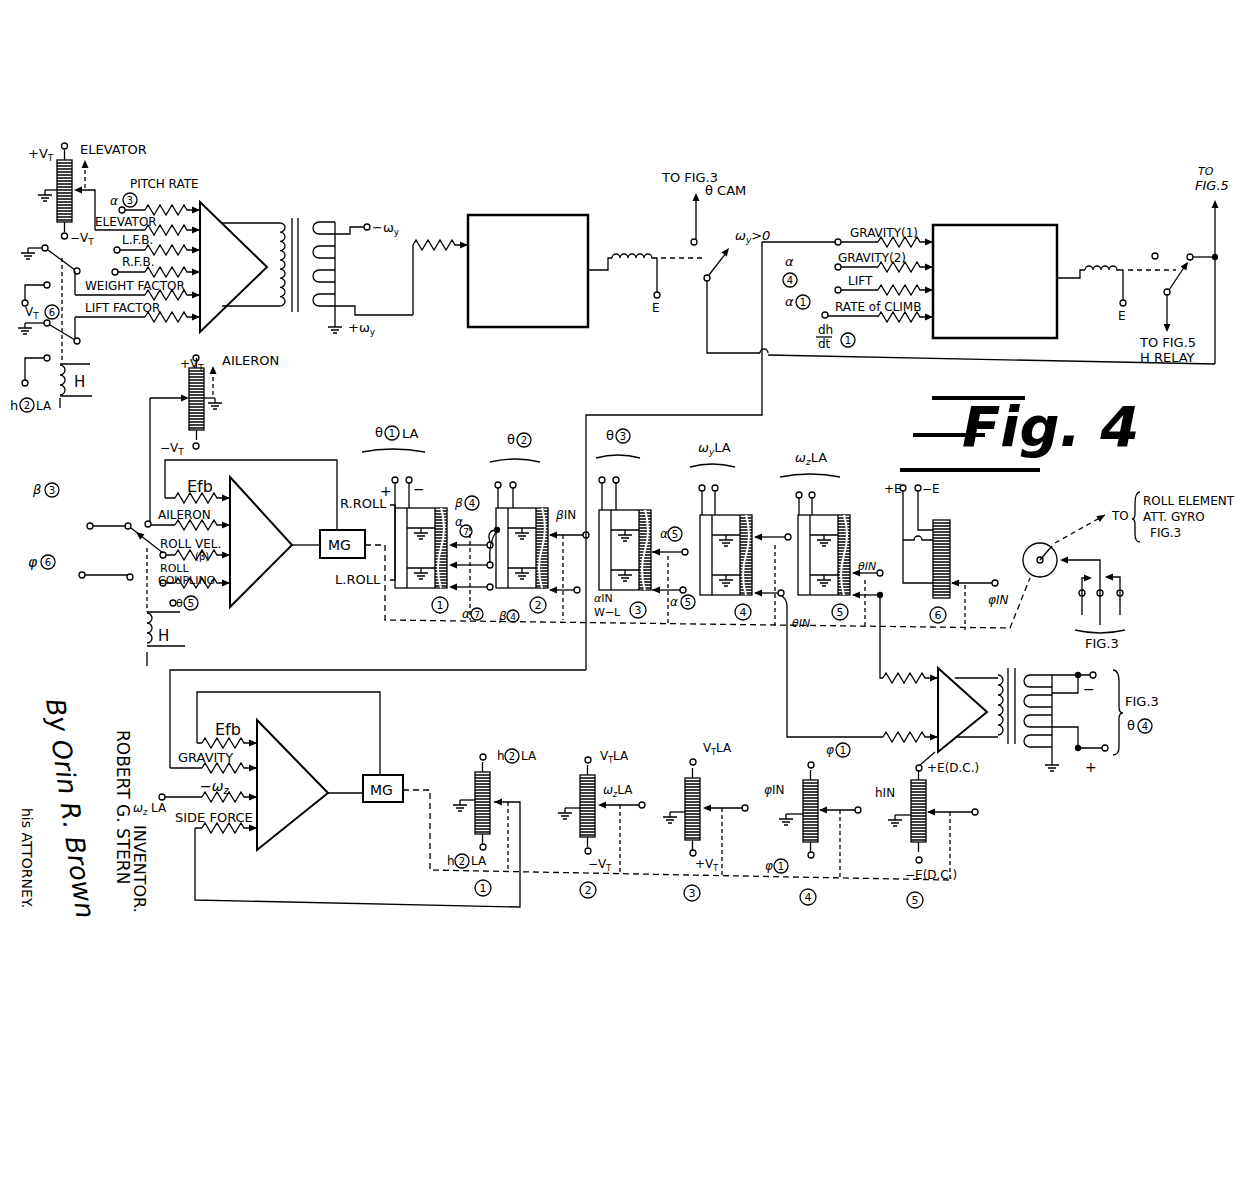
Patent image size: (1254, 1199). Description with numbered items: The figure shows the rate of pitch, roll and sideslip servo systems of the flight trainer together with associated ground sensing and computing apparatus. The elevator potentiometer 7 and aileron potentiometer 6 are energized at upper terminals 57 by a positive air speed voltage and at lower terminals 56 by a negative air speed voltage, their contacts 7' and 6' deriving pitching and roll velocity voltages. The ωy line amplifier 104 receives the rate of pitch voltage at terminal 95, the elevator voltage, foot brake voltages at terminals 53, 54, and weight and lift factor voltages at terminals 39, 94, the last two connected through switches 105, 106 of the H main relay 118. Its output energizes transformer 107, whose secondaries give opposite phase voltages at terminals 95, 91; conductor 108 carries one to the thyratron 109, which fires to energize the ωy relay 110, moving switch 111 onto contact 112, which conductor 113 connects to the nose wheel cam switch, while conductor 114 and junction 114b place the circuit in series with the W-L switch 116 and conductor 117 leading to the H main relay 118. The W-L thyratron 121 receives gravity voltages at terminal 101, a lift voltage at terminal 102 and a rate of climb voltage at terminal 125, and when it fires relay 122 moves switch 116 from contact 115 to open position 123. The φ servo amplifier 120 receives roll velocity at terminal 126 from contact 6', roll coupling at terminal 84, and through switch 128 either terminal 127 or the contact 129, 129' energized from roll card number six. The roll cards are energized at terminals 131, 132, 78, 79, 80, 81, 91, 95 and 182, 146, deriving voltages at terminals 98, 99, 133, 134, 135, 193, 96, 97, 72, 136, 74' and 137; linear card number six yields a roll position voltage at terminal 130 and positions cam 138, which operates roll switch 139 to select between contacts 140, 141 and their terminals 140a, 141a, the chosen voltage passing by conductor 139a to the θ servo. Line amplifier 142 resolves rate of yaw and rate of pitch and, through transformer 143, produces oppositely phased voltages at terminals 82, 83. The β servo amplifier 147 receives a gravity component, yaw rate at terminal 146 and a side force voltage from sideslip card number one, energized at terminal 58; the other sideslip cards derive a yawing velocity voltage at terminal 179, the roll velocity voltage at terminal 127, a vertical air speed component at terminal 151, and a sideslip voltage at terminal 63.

The aileron potentiometer 6 is at (195, 399).
The contact of aileron potentiometer 6' is at (183, 384).
The elevator potentiometer 7 is at (54, 191).
The contact of elevator potentiometer 7' is at (84, 195).
The terminal 39 is at (36, 294).
The terminal 53 is at (106, 249).
The terminal 54 is at (104, 271).
The negative tachometer voltage terminal 56 is at (61, 237).
The terminal 57 is at (62, 145).
The terminal 58 is at (481, 756).
The terminal 63 is at (963, 812).
The terminal 72 is at (818, 664).
The terminal 74' is at (869, 560).
The terminal 78 is at (518, 487).
The terminal 79 is at (498, 487).
The terminal 80 is at (622, 485).
The terminal 81 is at (604, 485).
The terminal 82 is at (1080, 738).
The terminal 83 is at (1077, 672).
The terminal 84 is at (161, 602).
The terminal 91 is at (521, 390).
The terminal 94 is at (254, 604).
The terminal 95 is at (363, 224).
The terminal 96 is at (672, 580).
The terminal 97 is at (688, 547).
The terminal 98 is at (471, 531).
The terminal 99 is at (471, 583).
The terminal 101 is at (835, 268).
The terminal 102 is at (835, 290).
The omega-y line amplifier 104 is at (218, 216).
The switch 105 is at (53, 302).
The switch 106 is at (80, 342).
The transformer 107 is at (300, 222).
The conductor 108 is at (416, 268).
The thyratron 109 is at (553, 215).
The omega-y relay 110 is at (651, 253).
The switch 111 is at (712, 279).
The contact 112 is at (709, 235).
The conductor 113 is at (692, 240).
The conductor 114 is at (1214, 217).
The conductor junction 114b is at (1229, 271).
The contact 115 is at (1202, 249).
The W-L thyratron switch 116 is at (1171, 293).
The conductor 117 is at (1168, 316).
The H main relay 118 is at (122, 515).
The phi servo amplifier 120 is at (245, 498).
The W-L thyratron 121 is at (1019, 224).
The W-L relay 122 is at (1116, 268).
The open position 123 is at (1155, 247).
The terminal 125 is at (822, 316).
The terminal 126 is at (133, 513).
The terminal 127 is at (82, 522).
The switch 128 is at (144, 540).
The contact 129 is at (130, 580).
The switch contact 129' is at (105, 514).
The terminal 130 is at (90, 574).
The terminal 131 is at (392, 480).
The terminal 132 is at (415, 483).
The terminal 133 is at (656, 649).
The terminal 134 is at (476, 508).
The terminal 135 is at (569, 516).
The pitch rate terminal 136 is at (772, 526).
The junction terminal 137 is at (881, 635).
The cam 138 is at (1048, 546).
The roll switch 139 is at (1105, 560).
The conductor 139a is at (1123, 599).
The contact 140 is at (1073, 594).
The gyro terminal 140a is at (1080, 612).
The contact 141 is at (1125, 575).
The gyro terminal 141a is at (1133, 617).
The line amplifier 142 is at (942, 675).
The transformer 143 is at (1008, 675).
The terminal 146 is at (490, 637).
The beta servo amplifier 147 is at (282, 744).
The terminal 151 is at (856, 807).
The terminal 179 is at (644, 803).
The terminal 182 is at (794, 494).
The angle of attack terminal 193 is at (568, 599).